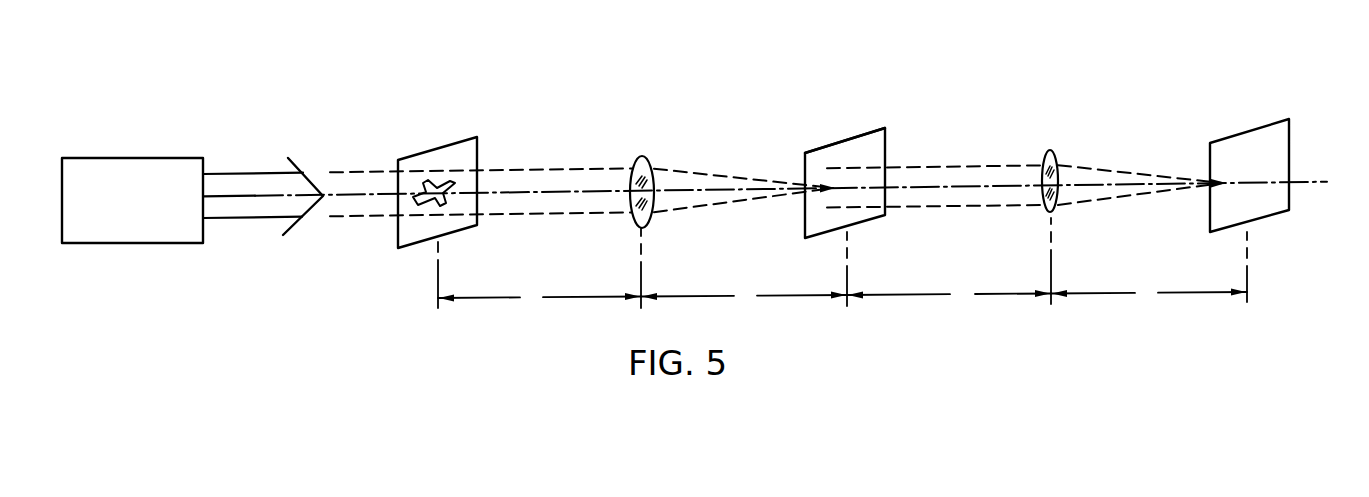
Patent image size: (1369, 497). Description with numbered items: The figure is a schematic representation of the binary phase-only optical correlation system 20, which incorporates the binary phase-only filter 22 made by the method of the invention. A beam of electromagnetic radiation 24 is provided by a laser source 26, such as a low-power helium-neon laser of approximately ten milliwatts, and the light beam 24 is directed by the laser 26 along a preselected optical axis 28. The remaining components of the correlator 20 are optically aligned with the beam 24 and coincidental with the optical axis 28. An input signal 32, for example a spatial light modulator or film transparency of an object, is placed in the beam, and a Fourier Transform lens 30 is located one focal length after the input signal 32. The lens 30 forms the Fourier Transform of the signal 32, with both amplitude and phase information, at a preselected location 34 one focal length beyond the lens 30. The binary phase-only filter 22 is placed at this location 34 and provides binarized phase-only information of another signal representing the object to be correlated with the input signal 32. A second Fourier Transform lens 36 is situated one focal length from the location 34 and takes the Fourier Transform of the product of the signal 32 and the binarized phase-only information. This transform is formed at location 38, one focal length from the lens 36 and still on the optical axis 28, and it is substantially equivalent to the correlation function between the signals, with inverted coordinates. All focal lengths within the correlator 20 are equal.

The binary phase-only optical correlation system 20 is at (588, 102).
The binary phase-only filter 22 is at (843, 141).
The beam of electromagnetic radiation 24 is at (232, 186).
The laser source 26 is at (110, 243).
The optical axis 28 is at (333, 196).
The Fourier Transform lens 30 is at (642, 156).
The input signal 32 is at (435, 178).
The preselected location 34 is at (823, 171).
The second Fourier Transform lens 36 is at (1047, 150).
The output location 38 is at (1243, 158).